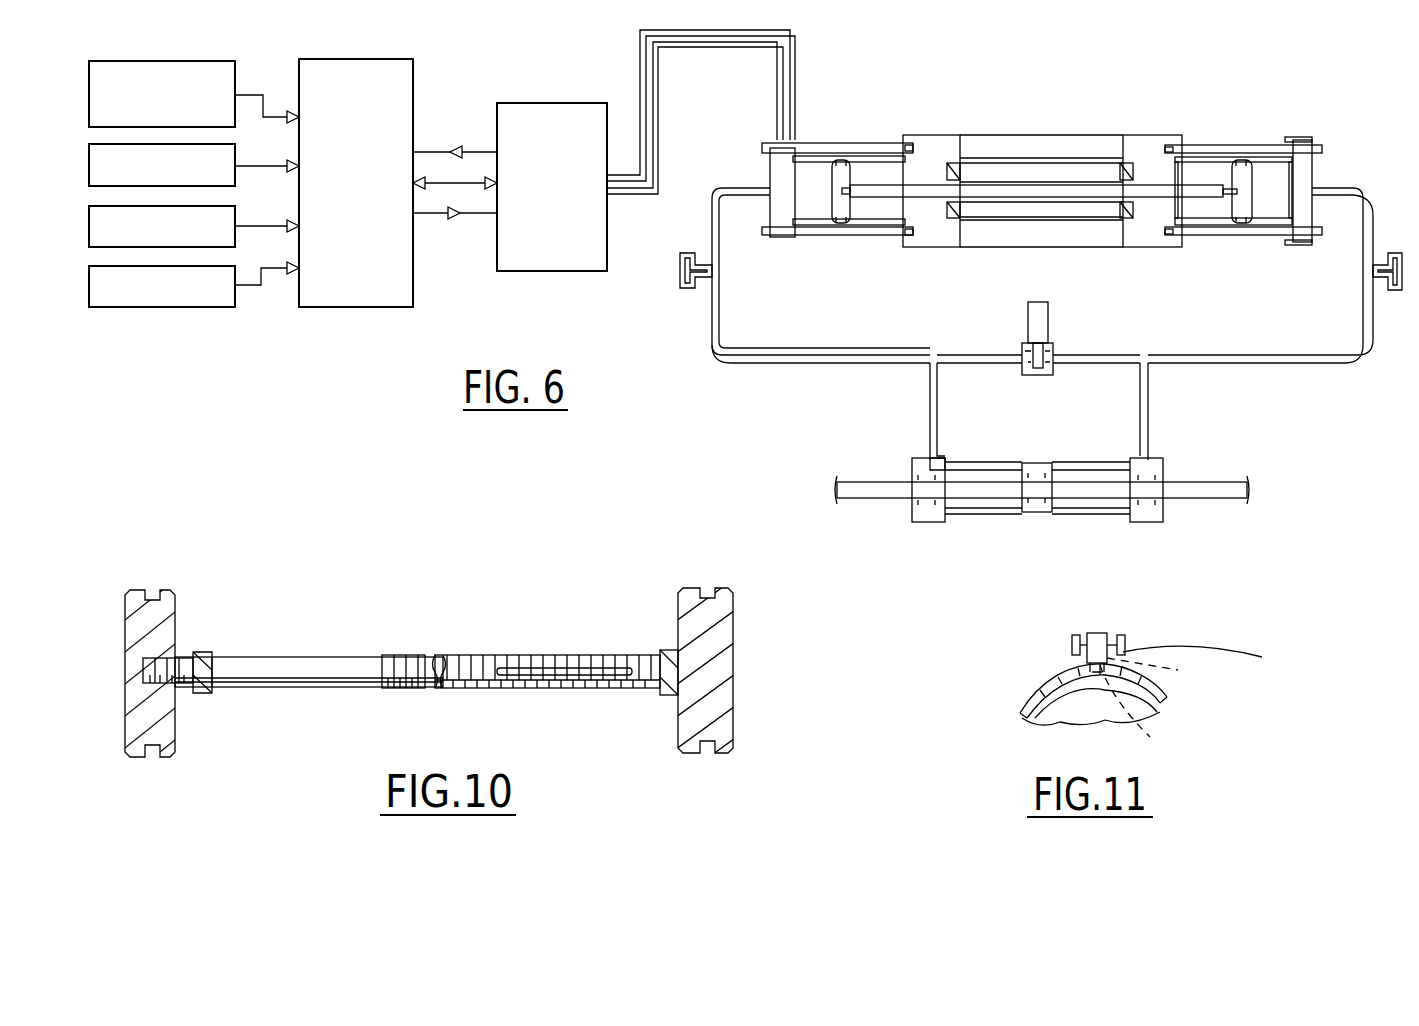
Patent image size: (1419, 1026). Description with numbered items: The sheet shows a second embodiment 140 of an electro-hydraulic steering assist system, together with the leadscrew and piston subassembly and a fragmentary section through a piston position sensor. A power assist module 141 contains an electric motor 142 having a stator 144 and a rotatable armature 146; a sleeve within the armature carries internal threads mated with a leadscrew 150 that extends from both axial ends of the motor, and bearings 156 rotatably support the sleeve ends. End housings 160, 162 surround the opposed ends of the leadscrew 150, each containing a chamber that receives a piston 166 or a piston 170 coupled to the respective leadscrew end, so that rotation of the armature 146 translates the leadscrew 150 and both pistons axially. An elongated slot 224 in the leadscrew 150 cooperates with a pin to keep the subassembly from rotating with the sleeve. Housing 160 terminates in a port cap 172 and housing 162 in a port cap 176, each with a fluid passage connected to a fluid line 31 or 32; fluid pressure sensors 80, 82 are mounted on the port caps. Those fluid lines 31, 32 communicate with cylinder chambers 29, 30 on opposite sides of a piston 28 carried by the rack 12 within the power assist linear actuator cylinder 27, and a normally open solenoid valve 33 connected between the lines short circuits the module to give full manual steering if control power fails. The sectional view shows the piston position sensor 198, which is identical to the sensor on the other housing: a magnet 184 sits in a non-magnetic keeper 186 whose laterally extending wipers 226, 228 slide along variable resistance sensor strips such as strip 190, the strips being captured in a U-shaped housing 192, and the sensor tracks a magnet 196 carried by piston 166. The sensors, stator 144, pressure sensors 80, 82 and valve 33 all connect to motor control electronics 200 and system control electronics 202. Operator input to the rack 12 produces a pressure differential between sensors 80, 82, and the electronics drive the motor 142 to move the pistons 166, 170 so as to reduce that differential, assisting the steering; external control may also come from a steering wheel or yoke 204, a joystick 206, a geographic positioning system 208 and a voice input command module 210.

In FIG. 6, the rack 12 is at (1207, 488).
In FIG. 6, the power assist linear actuator cylinder 27 is at (1046, 458).
In FIG. 6, the piston 28 is at (1038, 513).
In FIG. 6, the cylinder chamber 29 is at (975, 512).
In FIG. 6, the cylinder chamber 30 is at (1105, 514).
In FIG. 6, the fluid line 31 is at (808, 360).
In FIG. 6, the fluid line 32 is at (1232, 355).
In FIG. 6, the solenoid valve 33 is at (1052, 340).
In FIG. 6, the fluid pressure sensor 80 is at (680, 282).
In FIG. 6, the fluid pressure sensor 82 is at (1388, 253).
In FIG. 6, the second embodiment 140 is at (982, 52).
In FIG. 6, the power assist module 141 is at (958, 108).
In FIG. 6, the electric motor 142 is at (1082, 128).
In FIG. 6, the stator 144 is at (1008, 135).
In FIG. 6, the armature 146 is at (1095, 163).
In FIG. 6, the leadscrew 150 is at (1160, 198).
In FIG. 10, the leadscrew 150 is at (448, 655).
In FIG. 6, the bearings 156 is at (947, 213).
In FIG. 6, the end housing 160 is at (1257, 157).
In FIG. 11, the end housing 160 is at (1030, 700).
In FIG. 6, the end housing 162 is at (820, 157).
In FIG. 6, the piston 166 is at (1240, 210).
In FIG. 10, the piston 166 is at (733, 596).
In FIG. 11, the piston 166 is at (1058, 715).
In FIG. 6, the piston 170 is at (835, 212).
In FIG. 10, the piston 170 is at (175, 600).
In FIG. 6, the port cap 172 is at (1312, 172).
In FIG. 6, the port cap 176 is at (770, 172).
In FIG. 11, the magnet 184 is at (1176, 670).
In FIG. 11, the keeper 186 is at (1105, 640).
In FIG. 11, the sensor strip 190 is at (1072, 645).
In FIG. 11, the U-shaped housing 192 is at (1221, 657).
In FIG. 11, the magnet 196 is at (1135, 727).
In FIG. 11, the piston position sensor 198 is at (1278, 640).
In FIG. 6, the motor control electronics 200 is at (536, 103).
In FIG. 6, the system control electronics 202 is at (352, 59).
In FIG. 6, the steering wheel or yoke 204 is at (232, 61).
In FIG. 6, the joystick 206 is at (230, 151).
In FIG. 6, the geographic positioning system 208 is at (226, 208).
In FIG. 6, the voice input command module 210 is at (208, 307).
In FIG. 10, the slot 224 is at (550, 668).
In FIG. 11, the wiper 226 is at (1125, 650).
In FIG. 11, the wiper 228 is at (1085, 650).